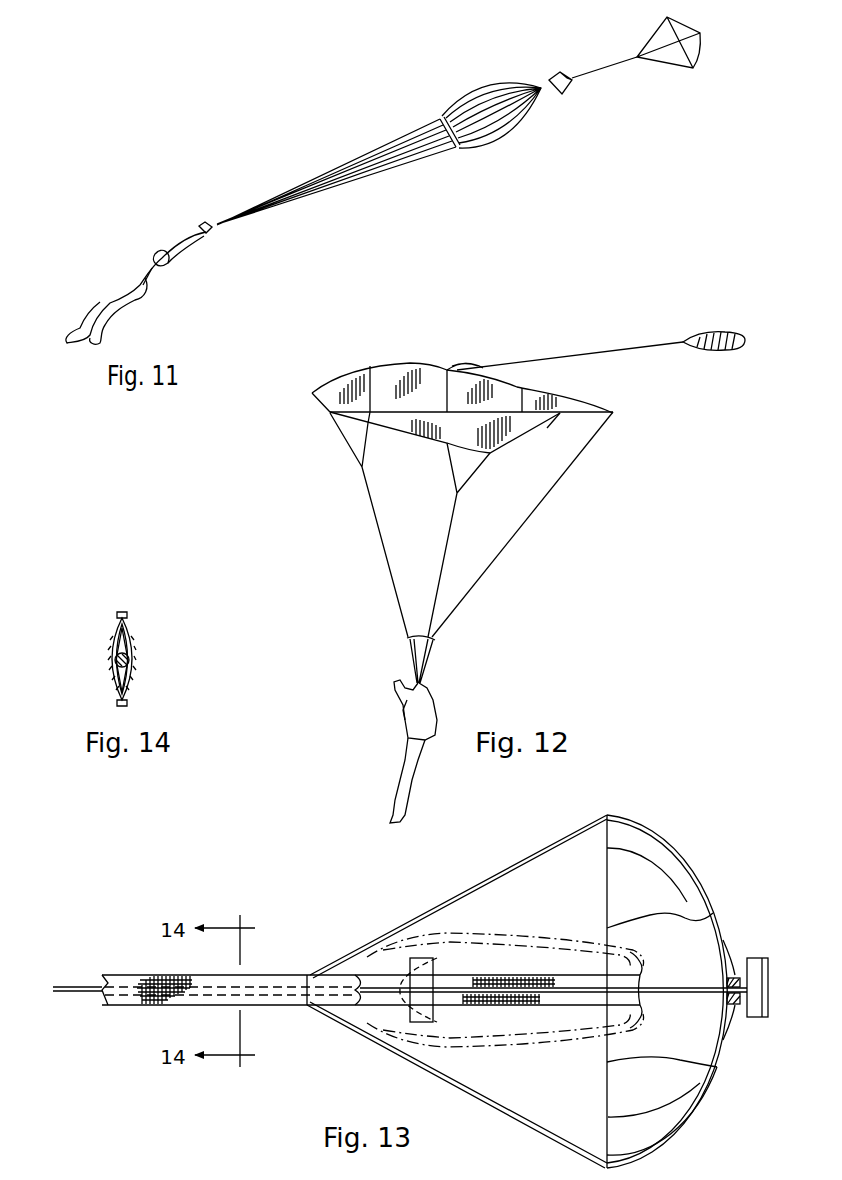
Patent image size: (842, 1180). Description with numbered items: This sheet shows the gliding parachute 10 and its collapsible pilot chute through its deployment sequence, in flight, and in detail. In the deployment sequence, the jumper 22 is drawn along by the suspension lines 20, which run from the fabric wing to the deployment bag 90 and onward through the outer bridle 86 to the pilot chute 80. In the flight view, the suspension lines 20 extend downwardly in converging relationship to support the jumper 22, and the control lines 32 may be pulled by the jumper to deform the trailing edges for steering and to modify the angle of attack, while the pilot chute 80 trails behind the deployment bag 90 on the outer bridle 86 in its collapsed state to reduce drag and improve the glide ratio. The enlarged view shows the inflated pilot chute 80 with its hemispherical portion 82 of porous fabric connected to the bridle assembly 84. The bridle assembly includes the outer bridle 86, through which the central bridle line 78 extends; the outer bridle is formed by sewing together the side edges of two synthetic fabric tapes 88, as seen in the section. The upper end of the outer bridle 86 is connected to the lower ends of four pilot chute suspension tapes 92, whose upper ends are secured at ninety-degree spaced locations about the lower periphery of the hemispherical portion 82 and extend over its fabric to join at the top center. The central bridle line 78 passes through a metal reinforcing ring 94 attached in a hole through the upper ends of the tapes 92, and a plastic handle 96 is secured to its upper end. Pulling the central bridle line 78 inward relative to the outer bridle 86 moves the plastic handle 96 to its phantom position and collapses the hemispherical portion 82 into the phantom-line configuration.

In FIG. 11, the parachute canopy 10 is at (508, 136).
In FIG. 12, the parachute canopy 10 is at (390, 358).
In FIG. 11, the suspension lines 20 is at (300, 184).
In FIG. 12, the suspension lines 20 is at (445, 532).
In FIG. 11, the jumper 22 is at (115, 290).
In FIG. 12, the jumper 22 is at (437, 692).
In FIG. 12, the control lines 32 is at (567, 476).
In FIG. 14, the central bridle line 78 is at (115, 676).
In FIG. 13, the central bridle line 78 is at (83, 985).
In FIG. 11, the pilot chute 80 is at (702, 38).
In FIG. 12, the pilot chute 80 is at (715, 331).
In FIG. 13, the pilot chute 80 is at (680, 848).
In FIG. 13, the hemispherical portion 82 is at (700, 1080).
In FIG. 13, the bridle assembly 84 is at (142, 1008).
In FIG. 11, the outer bridle 86 is at (606, 70).
In FIG. 12, the outer bridle 86 is at (614, 350).
In FIG. 14, the outer bridle 86 is at (140, 628).
In FIG. 13, the outer bridle 86 is at (280, 998).
In FIG. 14, the synthetic fabric tapes 88 is at (112, 648).
In FIG. 11, the deployment bag 90 is at (553, 69).
In FIG. 12, the deployment bag 90 is at (465, 362).
In FIG. 13, the pilot chute suspension tapes 92 is at (343, 980).
In FIG. 13, the metal reinforcing ring 94 is at (740, 1008).
In FIG. 13, the plastic handle 96 is at (756, 957).